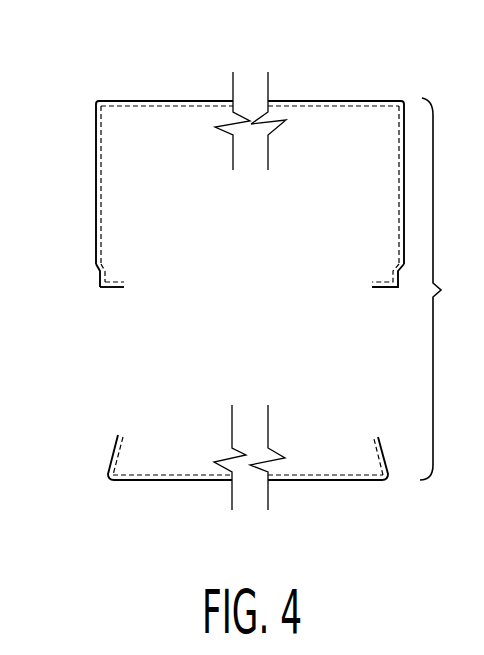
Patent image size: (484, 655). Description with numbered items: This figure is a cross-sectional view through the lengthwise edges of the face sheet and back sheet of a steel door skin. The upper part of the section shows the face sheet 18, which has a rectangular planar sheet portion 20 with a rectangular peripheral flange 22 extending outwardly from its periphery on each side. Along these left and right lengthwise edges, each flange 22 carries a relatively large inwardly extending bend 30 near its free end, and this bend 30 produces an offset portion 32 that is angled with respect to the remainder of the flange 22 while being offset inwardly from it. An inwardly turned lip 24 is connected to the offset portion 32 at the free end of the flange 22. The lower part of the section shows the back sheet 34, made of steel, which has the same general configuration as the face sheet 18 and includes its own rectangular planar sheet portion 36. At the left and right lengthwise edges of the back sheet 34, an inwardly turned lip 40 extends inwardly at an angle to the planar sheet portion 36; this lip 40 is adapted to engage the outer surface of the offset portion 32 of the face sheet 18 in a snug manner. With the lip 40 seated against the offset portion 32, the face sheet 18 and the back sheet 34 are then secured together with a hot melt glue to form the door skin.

The face sheet 18 is at (117, 84).
The planar sheet portion 20 is at (173, 101).
The peripheral flange 22 is at (95, 173).
The inwardly turned lip 24 is at (112, 286).
The inwardly extending bend 30 is at (96, 266).
The offset portion 32 is at (104, 262).
The back sheet 34 is at (170, 502).
The planar sheet portion 36 is at (322, 481).
The inwardly turned lip 40 is at (377, 452).